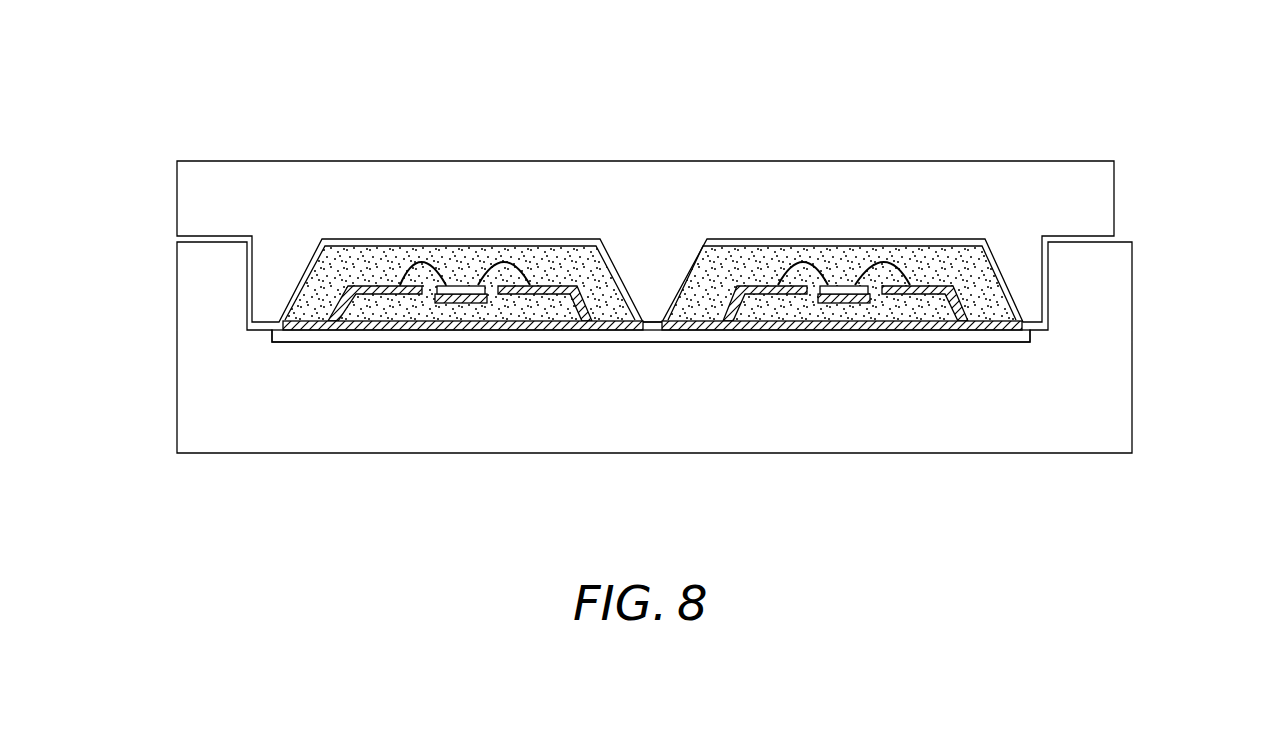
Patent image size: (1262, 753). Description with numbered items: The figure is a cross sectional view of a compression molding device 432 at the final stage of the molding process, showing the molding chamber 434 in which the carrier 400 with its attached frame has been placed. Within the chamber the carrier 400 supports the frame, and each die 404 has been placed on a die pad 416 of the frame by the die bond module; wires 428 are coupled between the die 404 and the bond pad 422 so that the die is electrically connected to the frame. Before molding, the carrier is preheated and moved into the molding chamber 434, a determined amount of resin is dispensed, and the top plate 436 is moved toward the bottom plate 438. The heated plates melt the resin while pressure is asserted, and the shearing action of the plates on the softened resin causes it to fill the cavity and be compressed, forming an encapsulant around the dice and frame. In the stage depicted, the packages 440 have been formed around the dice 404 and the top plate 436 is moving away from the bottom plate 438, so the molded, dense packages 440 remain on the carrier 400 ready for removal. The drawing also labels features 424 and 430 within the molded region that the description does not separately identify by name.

The carrier 400 is at (995, 338).
The die 404 is at (462, 284).
The die pad 416 is at (462, 303).
The bond pad 422 is at (380, 295).
The base layer 424 is at (348, 305).
The wires 428 is at (649, 322).
The bonding wire 430 is at (404, 278).
The compression molding device 432 is at (710, 266).
The molding chamber 434 is at (290, 247).
The top plate 436 is at (1097, 193).
The bottom plate 438 is at (1110, 317).
The packages 440 is at (940, 248).